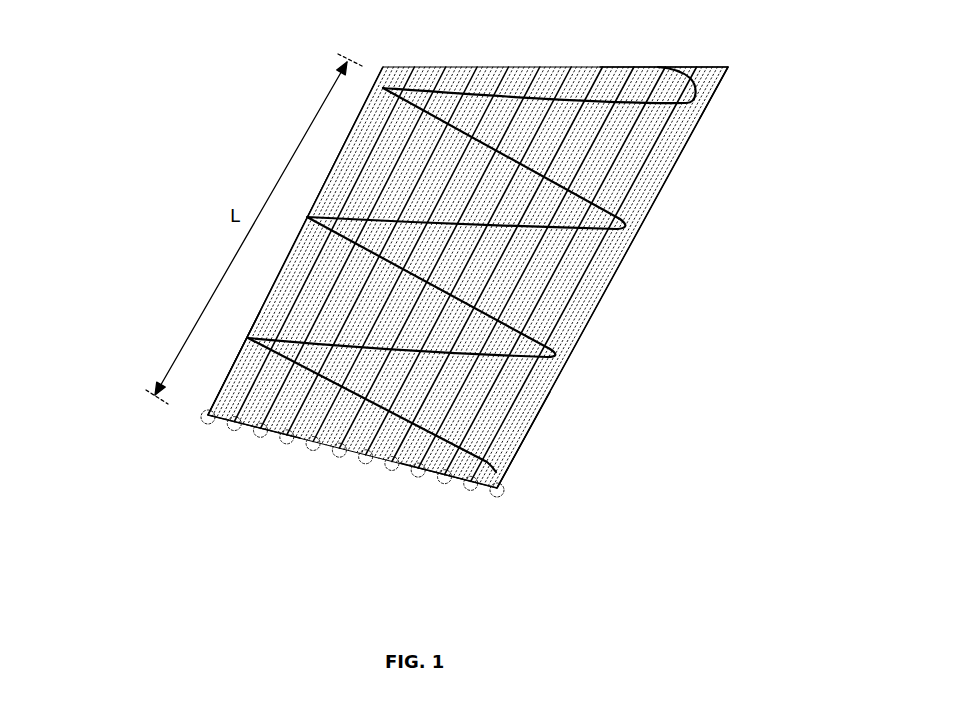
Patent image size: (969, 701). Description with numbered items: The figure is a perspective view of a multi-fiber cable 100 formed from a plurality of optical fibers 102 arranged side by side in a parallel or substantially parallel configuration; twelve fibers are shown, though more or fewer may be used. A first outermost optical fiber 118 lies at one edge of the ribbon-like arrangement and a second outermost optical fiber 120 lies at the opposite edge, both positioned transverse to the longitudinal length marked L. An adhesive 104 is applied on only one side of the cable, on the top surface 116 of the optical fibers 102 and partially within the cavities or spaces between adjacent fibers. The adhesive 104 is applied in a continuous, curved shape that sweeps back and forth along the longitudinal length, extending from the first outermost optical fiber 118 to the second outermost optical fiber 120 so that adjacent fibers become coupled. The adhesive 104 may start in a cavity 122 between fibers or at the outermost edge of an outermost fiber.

The multi-fiber cable 100 is at (205, 85).
The optical fibers 102 is at (497, 494).
The adhesive 104 is at (487, 462).
The top surface 116 is at (625, 150).
The first outermost optical fiber 118 is at (497, 488).
The second outermost optical fiber 120 is at (208, 415).
The cavity 122 is at (702, 68).